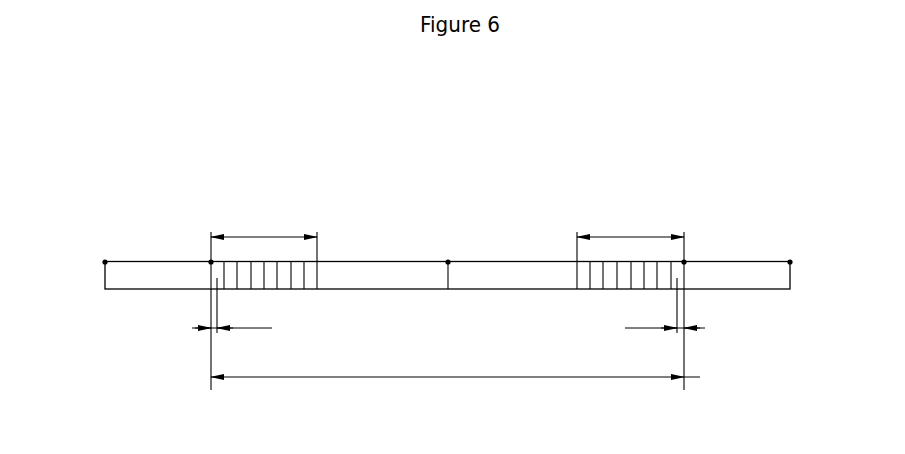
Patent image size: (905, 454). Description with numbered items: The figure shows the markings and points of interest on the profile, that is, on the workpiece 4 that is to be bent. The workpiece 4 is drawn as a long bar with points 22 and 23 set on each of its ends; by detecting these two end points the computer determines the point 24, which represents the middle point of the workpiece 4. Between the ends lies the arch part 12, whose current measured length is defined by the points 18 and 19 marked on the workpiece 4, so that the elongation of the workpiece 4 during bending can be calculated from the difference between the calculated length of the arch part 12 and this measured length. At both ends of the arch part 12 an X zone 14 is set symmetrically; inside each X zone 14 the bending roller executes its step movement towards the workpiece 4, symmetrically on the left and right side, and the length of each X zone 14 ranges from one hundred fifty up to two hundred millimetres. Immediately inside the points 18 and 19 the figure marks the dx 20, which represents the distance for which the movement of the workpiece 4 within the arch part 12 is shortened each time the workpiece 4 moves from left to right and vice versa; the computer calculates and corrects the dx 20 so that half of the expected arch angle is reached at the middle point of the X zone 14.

The workpiece 4 is at (348, 273).
The arch part 12 is at (455, 365).
The X zone 14 is at (293, 228).
The point 18 is at (211, 262).
The point 19 is at (684, 262).
The dx 20 is at (246, 329).
The point 22 is at (105, 262).
The point 23 is at (790, 262).
The middle point 24 is at (448, 262).